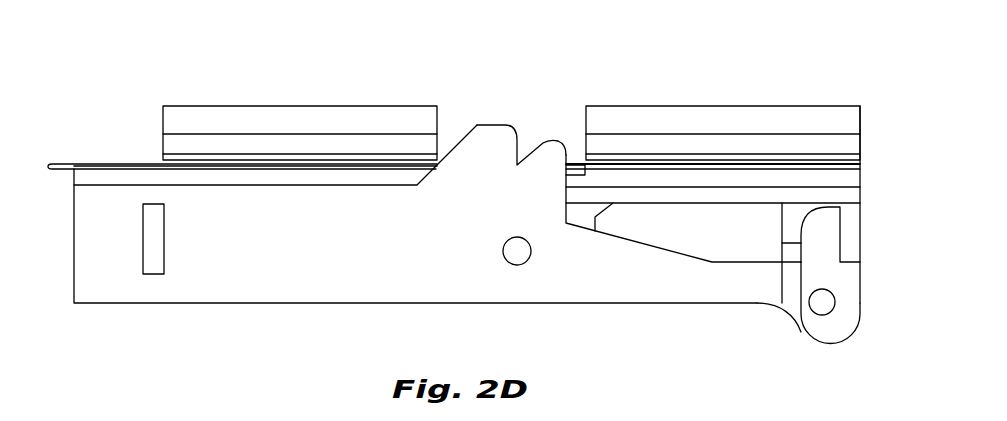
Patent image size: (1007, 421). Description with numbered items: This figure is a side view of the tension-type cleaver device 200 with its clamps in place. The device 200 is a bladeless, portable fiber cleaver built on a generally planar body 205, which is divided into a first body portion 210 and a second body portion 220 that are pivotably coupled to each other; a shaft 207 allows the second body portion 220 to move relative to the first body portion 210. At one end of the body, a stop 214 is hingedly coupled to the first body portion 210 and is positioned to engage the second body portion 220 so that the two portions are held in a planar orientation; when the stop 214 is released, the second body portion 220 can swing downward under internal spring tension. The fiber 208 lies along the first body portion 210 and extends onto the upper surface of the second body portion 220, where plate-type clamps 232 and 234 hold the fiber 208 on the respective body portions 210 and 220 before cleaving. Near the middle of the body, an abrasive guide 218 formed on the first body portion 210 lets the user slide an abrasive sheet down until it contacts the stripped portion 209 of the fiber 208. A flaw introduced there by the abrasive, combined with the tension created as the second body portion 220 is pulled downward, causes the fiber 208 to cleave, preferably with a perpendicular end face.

The tension-type cleaver device 200 is at (337, 50).
The body 205 is at (243, 305).
The shaft 207 is at (517, 253).
The fiber 208 is at (60, 162).
The stripped portion 209 is at (577, 163).
The first body portion 210 is at (155, 287).
The stop 214 is at (803, 322).
The abrasive guide 218 is at (520, 140).
The second body portion 220 is at (797, 177).
The clamp 232 is at (277, 117).
The clamp 234 is at (637, 117).